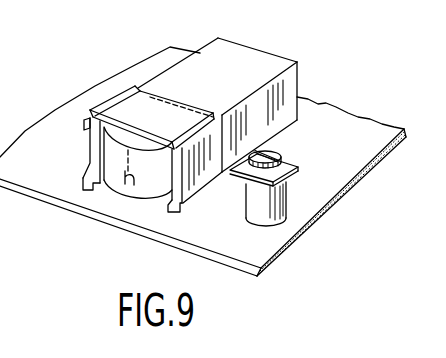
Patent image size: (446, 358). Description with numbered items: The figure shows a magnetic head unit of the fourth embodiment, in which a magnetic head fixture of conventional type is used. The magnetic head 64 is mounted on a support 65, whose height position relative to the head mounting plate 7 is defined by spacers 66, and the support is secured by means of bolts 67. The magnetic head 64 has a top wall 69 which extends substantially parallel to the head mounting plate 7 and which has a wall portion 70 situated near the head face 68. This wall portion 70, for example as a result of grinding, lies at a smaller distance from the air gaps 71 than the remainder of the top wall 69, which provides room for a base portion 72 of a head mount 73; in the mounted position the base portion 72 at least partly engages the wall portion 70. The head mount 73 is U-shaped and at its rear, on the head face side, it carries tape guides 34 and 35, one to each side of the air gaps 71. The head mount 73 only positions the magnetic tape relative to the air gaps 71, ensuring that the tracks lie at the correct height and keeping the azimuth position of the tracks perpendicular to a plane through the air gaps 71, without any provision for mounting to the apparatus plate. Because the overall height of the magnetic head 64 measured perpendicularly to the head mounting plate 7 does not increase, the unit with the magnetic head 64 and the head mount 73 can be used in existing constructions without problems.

The head mounting plate 7 is at (364, 153).
The tape guide 34 is at (180, 214).
The tape guide 35 is at (91, 188).
The magnetic head 64 is at (232, 103).
The support 65 is at (284, 157).
The spacers 66 is at (274, 202).
The bolts 67 is at (279, 157).
The head face 68 is at (73, 186).
The top wall 69 is at (223, 53).
The wall portion 70 is at (105, 197).
The air gaps 71 is at (138, 183).
The base portion 72 is at (144, 90).
The head mount 73 is at (109, 91).